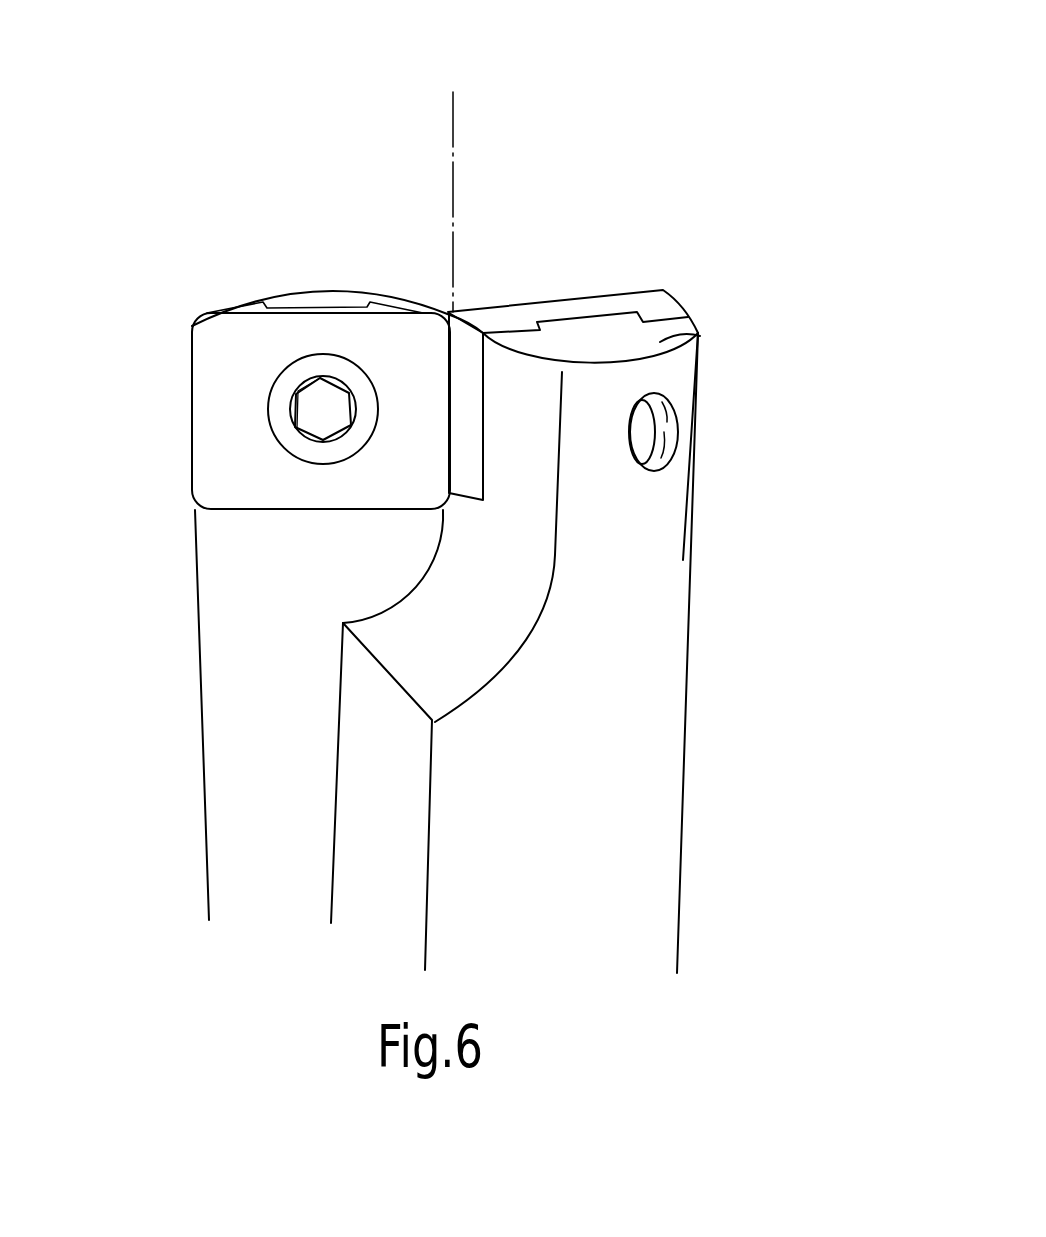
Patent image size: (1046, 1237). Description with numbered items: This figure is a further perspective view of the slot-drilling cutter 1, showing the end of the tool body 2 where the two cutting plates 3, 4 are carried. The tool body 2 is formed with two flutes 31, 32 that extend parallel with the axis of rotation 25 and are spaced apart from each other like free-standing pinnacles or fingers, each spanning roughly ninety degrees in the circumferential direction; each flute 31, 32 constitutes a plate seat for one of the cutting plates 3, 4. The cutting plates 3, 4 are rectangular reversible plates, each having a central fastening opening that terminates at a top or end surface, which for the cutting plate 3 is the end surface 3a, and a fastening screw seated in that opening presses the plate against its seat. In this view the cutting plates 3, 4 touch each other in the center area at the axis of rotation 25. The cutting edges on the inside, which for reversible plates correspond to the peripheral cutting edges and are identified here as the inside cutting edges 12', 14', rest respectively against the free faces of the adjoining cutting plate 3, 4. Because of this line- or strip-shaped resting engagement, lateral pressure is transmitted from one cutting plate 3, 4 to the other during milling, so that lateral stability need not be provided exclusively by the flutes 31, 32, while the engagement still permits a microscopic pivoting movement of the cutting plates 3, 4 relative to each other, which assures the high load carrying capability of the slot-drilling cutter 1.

The slot-drilling cutter 1 is at (740, 108).
The tool body 2 is at (628, 690).
The cutting plate 3 is at (260, 310).
The top or end surface of the cutting plate 3a is at (268, 488).
The cutting plate 4 is at (655, 305).
The inside cutting edge 12' is at (358, 421).
The inside cutting edge 14' is at (514, 263).
The axis of rotation 25 is at (453, 133).
The flute 31 is at (303, 289).
The flute 32 is at (700, 336).